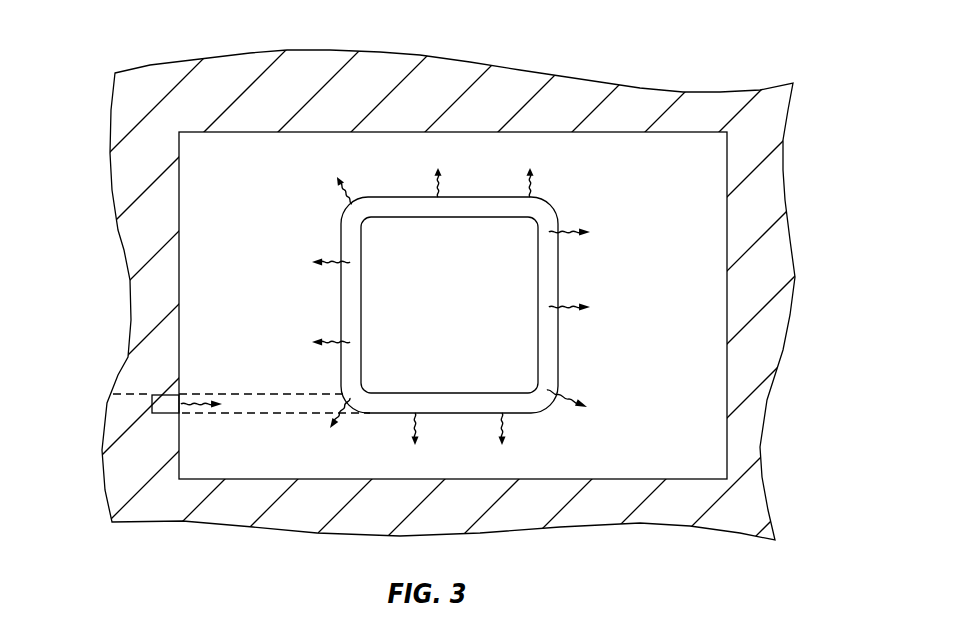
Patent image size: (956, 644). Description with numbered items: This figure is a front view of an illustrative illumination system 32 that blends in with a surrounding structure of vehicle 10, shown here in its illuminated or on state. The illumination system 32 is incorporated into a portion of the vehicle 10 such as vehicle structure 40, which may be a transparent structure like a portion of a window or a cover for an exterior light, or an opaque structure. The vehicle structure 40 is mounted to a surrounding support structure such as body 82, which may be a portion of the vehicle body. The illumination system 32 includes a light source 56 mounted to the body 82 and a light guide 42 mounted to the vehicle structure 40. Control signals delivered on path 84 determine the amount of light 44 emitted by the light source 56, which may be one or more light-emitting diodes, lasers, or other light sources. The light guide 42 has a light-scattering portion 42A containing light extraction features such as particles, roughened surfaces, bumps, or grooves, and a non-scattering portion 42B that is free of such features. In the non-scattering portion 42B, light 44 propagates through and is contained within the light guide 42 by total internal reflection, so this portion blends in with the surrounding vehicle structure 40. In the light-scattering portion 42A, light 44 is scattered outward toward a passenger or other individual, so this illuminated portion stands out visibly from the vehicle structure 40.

The vehicle 10 is at (692, 58).
The illumination system 32 is at (400, 313).
The vehicle structure 40 is at (707, 235).
The light guide 42 is at (497, 205).
The light-scattering portion 42A is at (538, 398).
The non-scattering portion 42B is at (268, 405).
The light 44 is at (575, 312).
The light source 56 is at (167, 410).
The body 82 is at (763, 347).
The path 84 is at (137, 403).